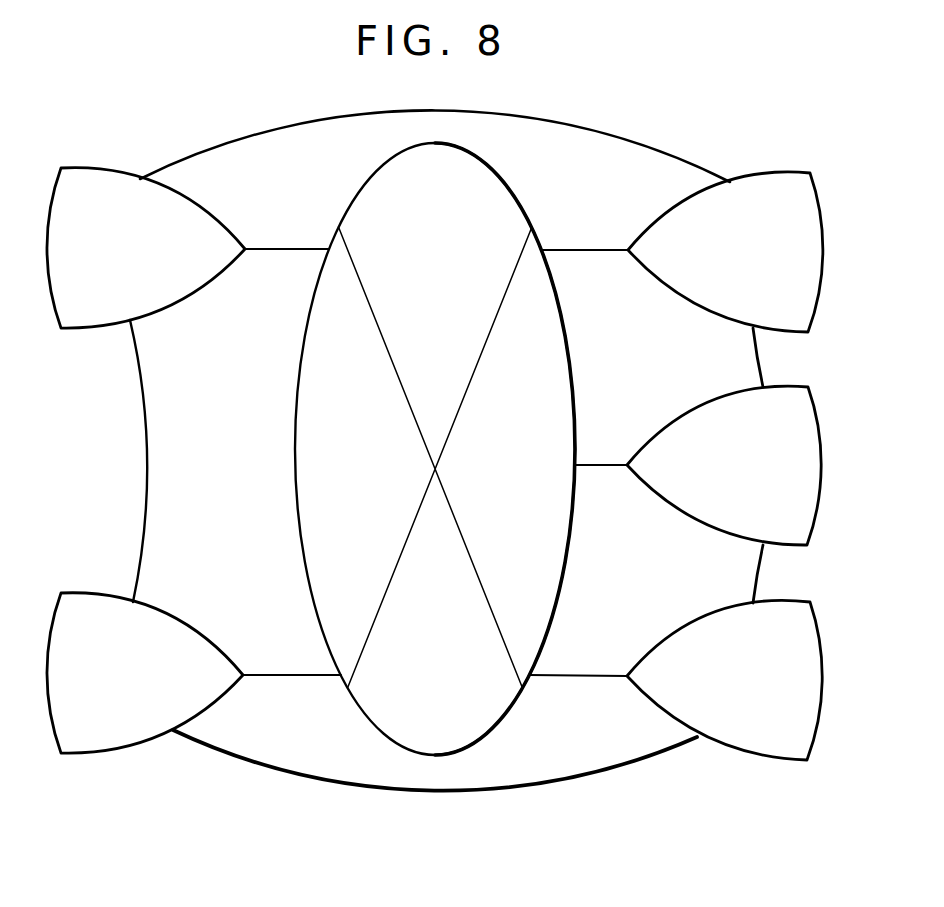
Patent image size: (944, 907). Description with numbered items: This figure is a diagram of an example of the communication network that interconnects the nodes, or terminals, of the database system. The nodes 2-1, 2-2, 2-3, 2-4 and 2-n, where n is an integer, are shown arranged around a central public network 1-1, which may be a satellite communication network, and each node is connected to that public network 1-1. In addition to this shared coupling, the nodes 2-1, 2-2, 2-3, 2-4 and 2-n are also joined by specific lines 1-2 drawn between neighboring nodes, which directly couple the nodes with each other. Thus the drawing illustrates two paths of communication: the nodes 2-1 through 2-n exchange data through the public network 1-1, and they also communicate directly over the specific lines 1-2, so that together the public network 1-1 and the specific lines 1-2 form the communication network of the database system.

The public network 1-1 is at (508, 187).
The specific lines 1-2 is at (288, 128).
The node 2-1 is at (90, 168).
The node 2-2 is at (788, 173).
The node 2-3 is at (823, 425).
The node 2-4 is at (792, 763).
The node 2-n is at (78, 593).